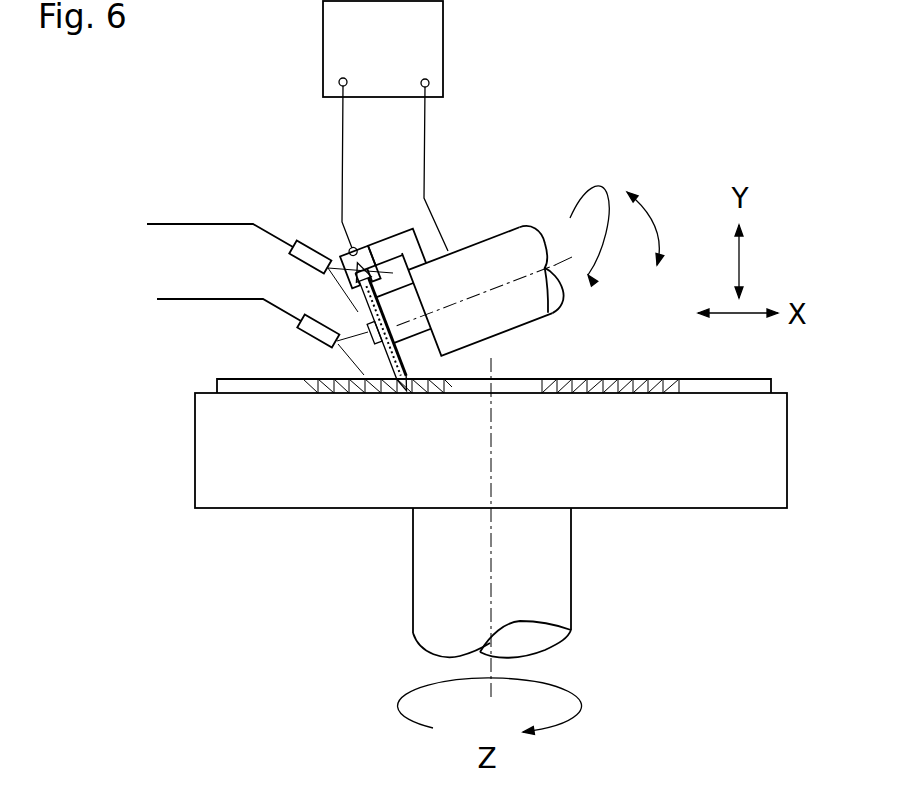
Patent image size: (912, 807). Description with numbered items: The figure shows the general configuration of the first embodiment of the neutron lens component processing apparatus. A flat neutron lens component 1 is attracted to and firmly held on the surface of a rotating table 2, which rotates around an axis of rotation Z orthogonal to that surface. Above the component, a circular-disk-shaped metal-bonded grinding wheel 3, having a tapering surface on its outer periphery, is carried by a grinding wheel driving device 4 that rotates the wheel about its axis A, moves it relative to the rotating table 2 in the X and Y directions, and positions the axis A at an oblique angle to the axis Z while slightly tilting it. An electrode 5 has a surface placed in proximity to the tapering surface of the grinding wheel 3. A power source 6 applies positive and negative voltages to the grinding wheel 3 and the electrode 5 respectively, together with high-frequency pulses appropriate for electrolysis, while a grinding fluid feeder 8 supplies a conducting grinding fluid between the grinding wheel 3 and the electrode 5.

The neutron lens component 1 is at (758, 384).
The rotating table 2 is at (768, 467).
The circular-disk-shaped metal-bonded grinding wheel 3 is at (358, 312).
The grinding wheel driving device 4 is at (511, 248).
The electrode 5 is at (358, 258).
The power source 6 is at (428, 41).
The grinding fluid feeder 8 is at (207, 220).